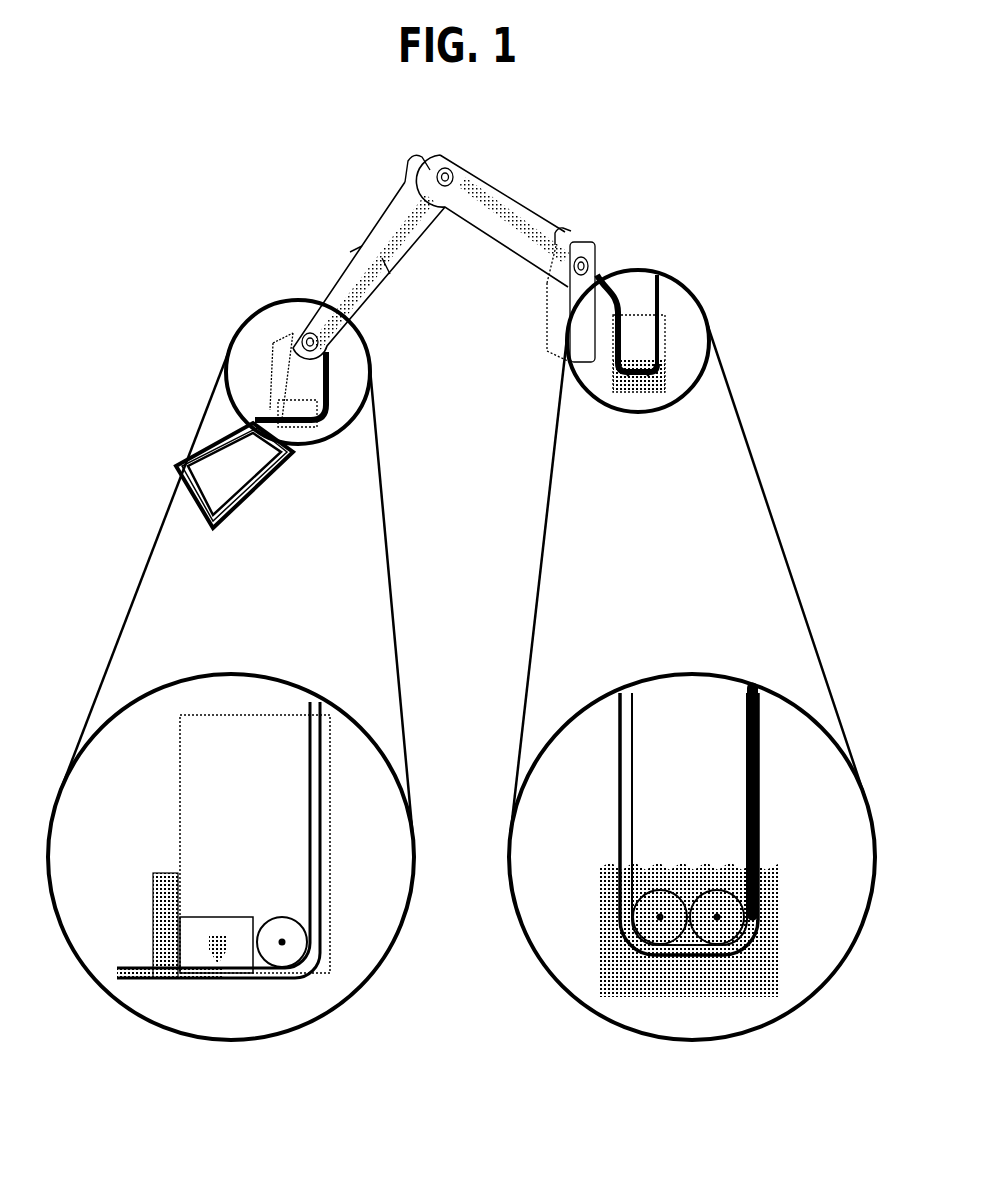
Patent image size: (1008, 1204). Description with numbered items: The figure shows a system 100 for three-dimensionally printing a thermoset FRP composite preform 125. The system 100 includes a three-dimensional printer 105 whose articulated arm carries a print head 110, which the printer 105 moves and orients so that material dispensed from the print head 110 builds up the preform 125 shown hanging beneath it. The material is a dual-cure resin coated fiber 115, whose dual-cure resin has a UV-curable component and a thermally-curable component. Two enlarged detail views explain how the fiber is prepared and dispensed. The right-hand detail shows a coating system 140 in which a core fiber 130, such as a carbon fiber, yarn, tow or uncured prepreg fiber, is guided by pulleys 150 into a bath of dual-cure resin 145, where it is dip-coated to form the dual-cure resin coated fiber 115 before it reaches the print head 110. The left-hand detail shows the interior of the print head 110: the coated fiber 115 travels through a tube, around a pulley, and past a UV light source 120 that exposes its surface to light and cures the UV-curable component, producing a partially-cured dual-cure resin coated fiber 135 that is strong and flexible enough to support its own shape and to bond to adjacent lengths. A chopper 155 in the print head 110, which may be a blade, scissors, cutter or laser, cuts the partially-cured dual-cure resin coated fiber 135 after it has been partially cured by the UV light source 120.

The system 100 is at (228, 236).
The 3D-printer 105 is at (432, 275).
The print head 110 is at (312, 643).
The dual-cure resin coated fiber 115 is at (437, 626).
The UV light source 120 is at (218, 928).
The thermoset FRP composite preform 125 is at (234, 502).
The core fiber 130 is at (730, 595).
The partially-cured dual-cure resin coated fiber 135 is at (149, 946).
The coating system 140 is at (695, 328).
The bath of dual-cure resin 145 is at (724, 929).
The pulleys 150 is at (703, 868).
The chopper 155 is at (138, 900).